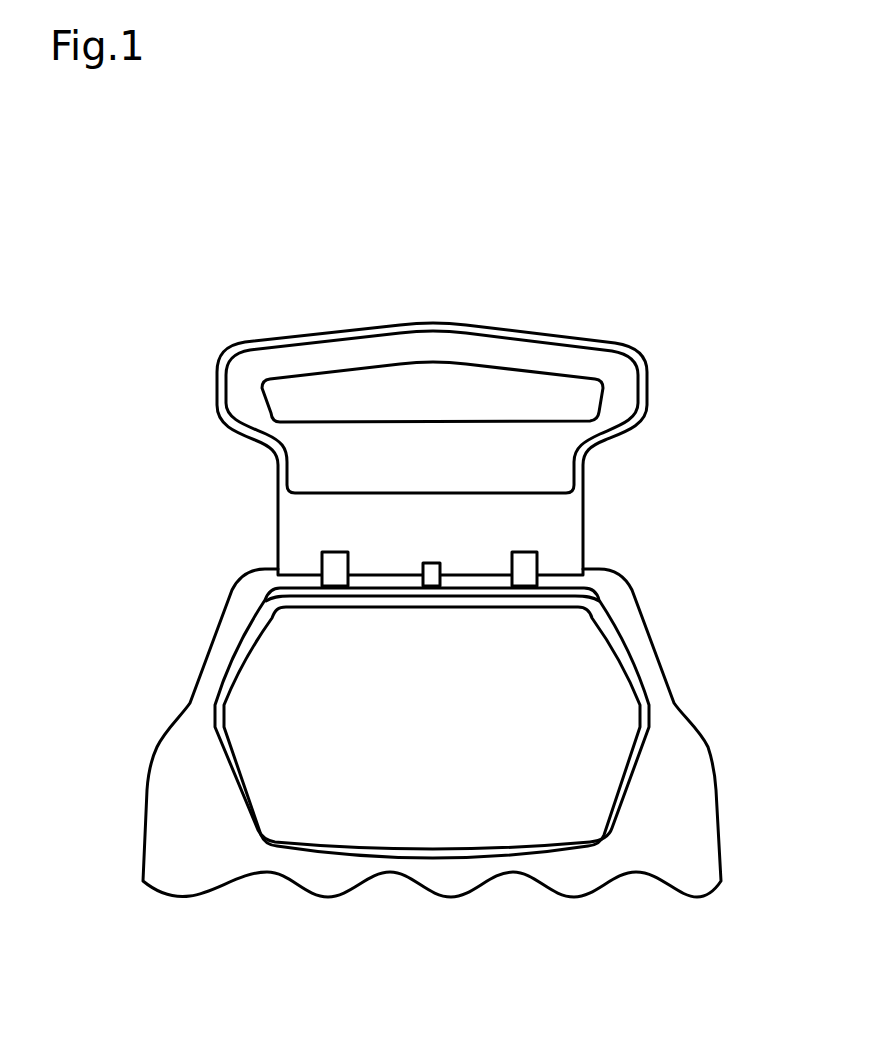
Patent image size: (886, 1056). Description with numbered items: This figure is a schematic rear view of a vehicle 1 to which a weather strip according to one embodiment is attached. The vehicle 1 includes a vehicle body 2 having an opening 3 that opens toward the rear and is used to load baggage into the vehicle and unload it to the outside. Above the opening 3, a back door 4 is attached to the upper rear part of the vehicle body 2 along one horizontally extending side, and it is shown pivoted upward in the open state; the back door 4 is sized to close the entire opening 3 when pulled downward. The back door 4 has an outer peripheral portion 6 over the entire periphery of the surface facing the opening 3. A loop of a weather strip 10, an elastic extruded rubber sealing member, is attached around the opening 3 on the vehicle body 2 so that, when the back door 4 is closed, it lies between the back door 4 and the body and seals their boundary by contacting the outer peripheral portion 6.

The vehicle 1 is at (218, 288).
The vehicle body 2 is at (640, 622).
The opening 3 is at (245, 672).
The back door 4 is at (375, 401).
The outer peripheral portion 6 is at (507, 330).
The weather strip 10 is at (620, 660).